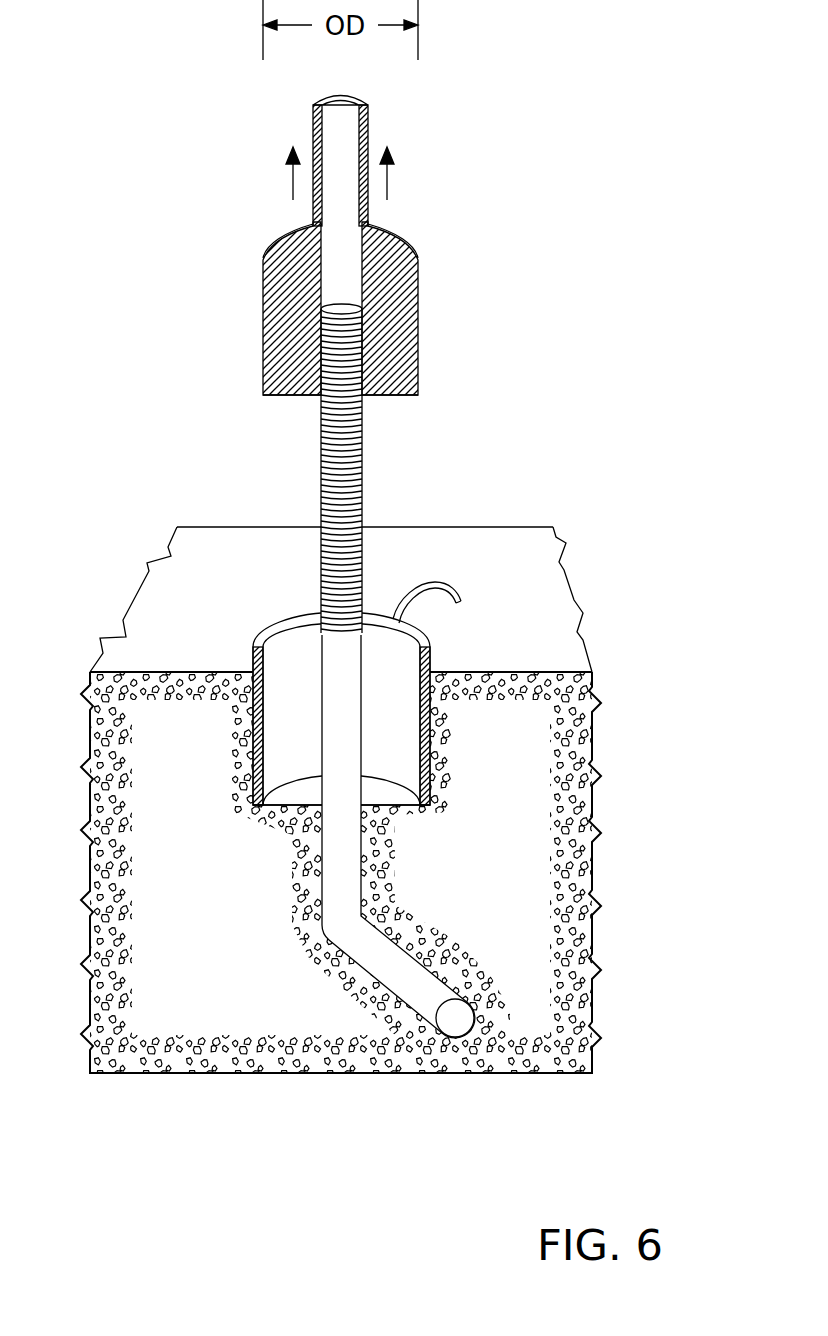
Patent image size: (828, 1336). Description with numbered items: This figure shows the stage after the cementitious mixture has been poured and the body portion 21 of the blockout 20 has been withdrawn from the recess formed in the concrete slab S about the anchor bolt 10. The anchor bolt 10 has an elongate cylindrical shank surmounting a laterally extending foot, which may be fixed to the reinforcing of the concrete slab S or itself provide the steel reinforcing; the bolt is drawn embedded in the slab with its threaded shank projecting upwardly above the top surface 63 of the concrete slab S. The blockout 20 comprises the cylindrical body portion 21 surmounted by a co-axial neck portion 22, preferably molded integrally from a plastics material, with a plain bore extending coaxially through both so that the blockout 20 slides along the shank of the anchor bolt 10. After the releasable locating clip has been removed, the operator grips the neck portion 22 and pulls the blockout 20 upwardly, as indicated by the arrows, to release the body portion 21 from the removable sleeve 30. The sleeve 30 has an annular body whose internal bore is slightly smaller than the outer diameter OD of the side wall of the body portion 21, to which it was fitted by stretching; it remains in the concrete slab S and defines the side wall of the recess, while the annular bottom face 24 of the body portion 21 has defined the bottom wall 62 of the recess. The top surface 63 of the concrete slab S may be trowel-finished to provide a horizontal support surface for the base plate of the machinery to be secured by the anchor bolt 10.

The anchor bolt 10 is at (485, 493).
The blockout 20 is at (455, 254).
The body portion 21 is at (420, 367).
The neck portion 22 is at (372, 122).
The annular bottom face 24 is at (396, 397).
The removable sleeve 30 is at (377, 695).
The bottom wall 62 is at (385, 790).
The top surface 63 is at (537, 578).
The concrete slab S is at (345, 1078).